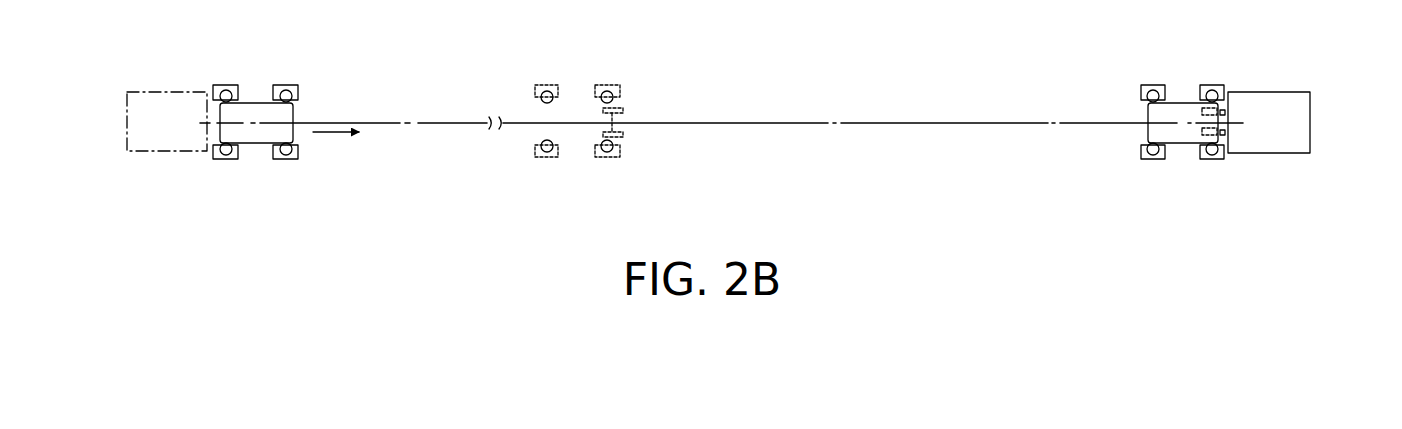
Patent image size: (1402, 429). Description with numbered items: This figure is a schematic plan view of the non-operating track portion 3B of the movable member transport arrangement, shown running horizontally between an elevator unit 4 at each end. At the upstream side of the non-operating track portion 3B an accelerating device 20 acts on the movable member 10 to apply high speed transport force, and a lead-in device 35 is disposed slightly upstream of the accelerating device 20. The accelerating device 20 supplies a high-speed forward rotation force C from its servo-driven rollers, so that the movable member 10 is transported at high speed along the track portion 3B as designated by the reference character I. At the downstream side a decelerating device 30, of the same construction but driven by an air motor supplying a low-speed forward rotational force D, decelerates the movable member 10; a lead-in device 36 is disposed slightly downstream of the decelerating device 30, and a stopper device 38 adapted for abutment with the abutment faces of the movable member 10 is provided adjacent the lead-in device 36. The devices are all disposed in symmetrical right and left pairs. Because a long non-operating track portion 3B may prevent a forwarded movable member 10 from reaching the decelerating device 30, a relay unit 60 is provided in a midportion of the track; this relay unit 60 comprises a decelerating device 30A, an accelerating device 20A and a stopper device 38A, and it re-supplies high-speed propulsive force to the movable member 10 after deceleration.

The elevator unit 4 is at (177, 127).
The movable member 10 is at (252, 100).
The accelerating device 20 is at (282, 117).
The lead-in device 35 is at (225, 82).
The decelerating device 30 is at (1149, 83).
The lead-in device 36 is at (1208, 83).
The stopper device 38 is at (1229, 107).
The stopper device 38A is at (625, 107).
The accelerating device 20A is at (606, 161).
The decelerating device 30A is at (541, 159).
The relay unit 60 is at (575, 106).
The non-operating track portion 3B is at (877, 124).
The high-speed forward rotation force C is at (281, 130).
The low-speed forward rotational force D is at (1160, 129).
The transport direction I is at (336, 133).